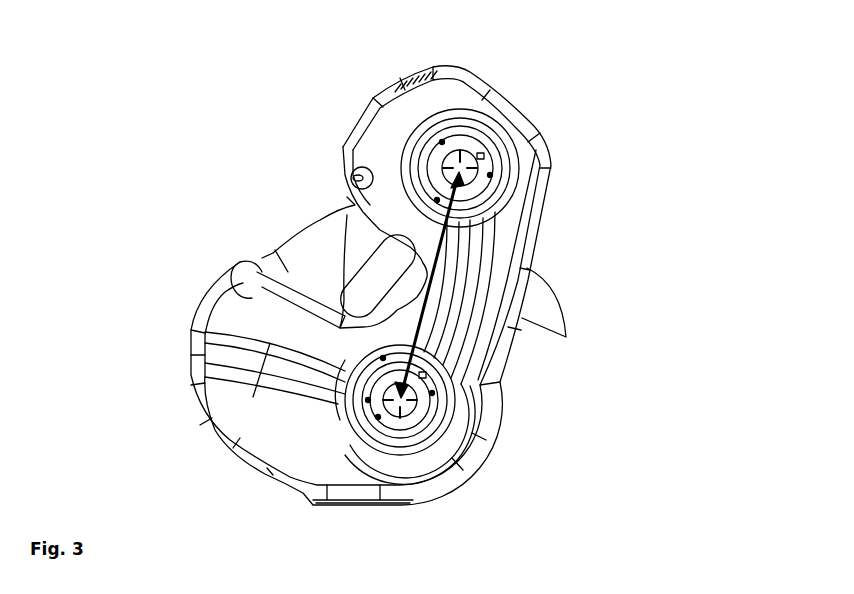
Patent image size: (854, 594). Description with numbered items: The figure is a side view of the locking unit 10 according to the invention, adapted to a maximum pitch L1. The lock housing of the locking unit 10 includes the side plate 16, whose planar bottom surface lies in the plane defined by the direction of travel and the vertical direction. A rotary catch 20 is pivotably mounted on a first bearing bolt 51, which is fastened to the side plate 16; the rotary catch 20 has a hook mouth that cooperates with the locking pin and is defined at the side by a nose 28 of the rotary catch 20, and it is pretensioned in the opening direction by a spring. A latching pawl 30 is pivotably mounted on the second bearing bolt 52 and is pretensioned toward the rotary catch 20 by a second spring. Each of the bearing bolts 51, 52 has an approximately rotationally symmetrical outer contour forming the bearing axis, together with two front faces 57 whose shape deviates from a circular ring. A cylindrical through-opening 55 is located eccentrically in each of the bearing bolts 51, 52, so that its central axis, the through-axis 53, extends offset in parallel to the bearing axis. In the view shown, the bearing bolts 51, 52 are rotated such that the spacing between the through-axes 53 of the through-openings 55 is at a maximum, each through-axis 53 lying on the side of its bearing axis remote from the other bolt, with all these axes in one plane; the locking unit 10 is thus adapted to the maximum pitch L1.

The locking unit 10 is at (128, 411).
The side plate 16 is at (255, 292).
The rotary catch 20 is at (343, 233).
The nose 28 is at (307, 251).
The latching pawl 30 is at (543, 305).
The first bearing bolt 51 is at (410, 403).
The second bearing bolt 52 is at (487, 162).
The through-axis 53 is at (458, 163).
The through-opening 55 is at (463, 157).
The front faces 57 is at (465, 192).
The maximum pitch L1 is at (432, 293).